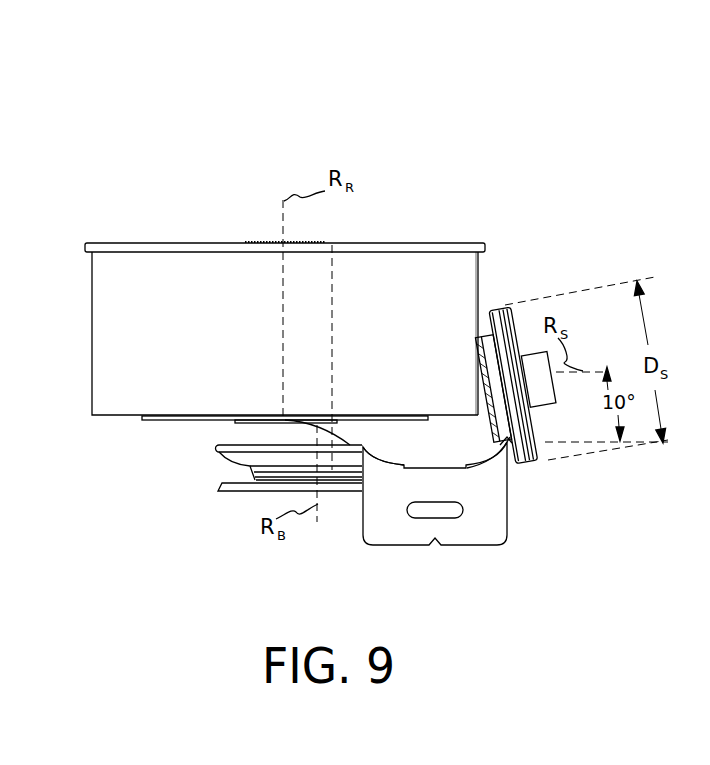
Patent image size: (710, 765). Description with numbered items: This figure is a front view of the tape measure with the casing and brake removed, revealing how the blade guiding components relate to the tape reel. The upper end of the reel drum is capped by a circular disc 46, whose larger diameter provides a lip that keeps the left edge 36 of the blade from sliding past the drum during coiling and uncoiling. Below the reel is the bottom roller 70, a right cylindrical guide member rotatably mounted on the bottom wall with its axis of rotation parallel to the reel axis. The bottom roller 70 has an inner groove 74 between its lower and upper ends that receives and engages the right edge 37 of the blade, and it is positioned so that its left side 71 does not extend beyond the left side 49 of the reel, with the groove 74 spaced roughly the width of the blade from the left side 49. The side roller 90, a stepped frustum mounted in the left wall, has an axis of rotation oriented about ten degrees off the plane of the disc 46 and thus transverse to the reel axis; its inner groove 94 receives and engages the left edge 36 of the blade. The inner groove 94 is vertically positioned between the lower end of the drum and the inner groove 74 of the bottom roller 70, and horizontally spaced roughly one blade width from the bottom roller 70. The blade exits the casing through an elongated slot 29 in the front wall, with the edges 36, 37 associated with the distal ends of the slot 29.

The circular disc 46 is at (196, 243).
The left side of the reel 49 is at (478, 270).
The inner groove 94 is at (474, 312).
The left edge 36 is at (313, 428).
The inner groove 74 is at (192, 474).
The bottom roller 70 is at (190, 512).
The left side of the bottom roller 71 is at (396, 452).
The right edge 37 is at (482, 418).
The side roller 90 is at (543, 392).
The elongated slot 29 is at (471, 527).